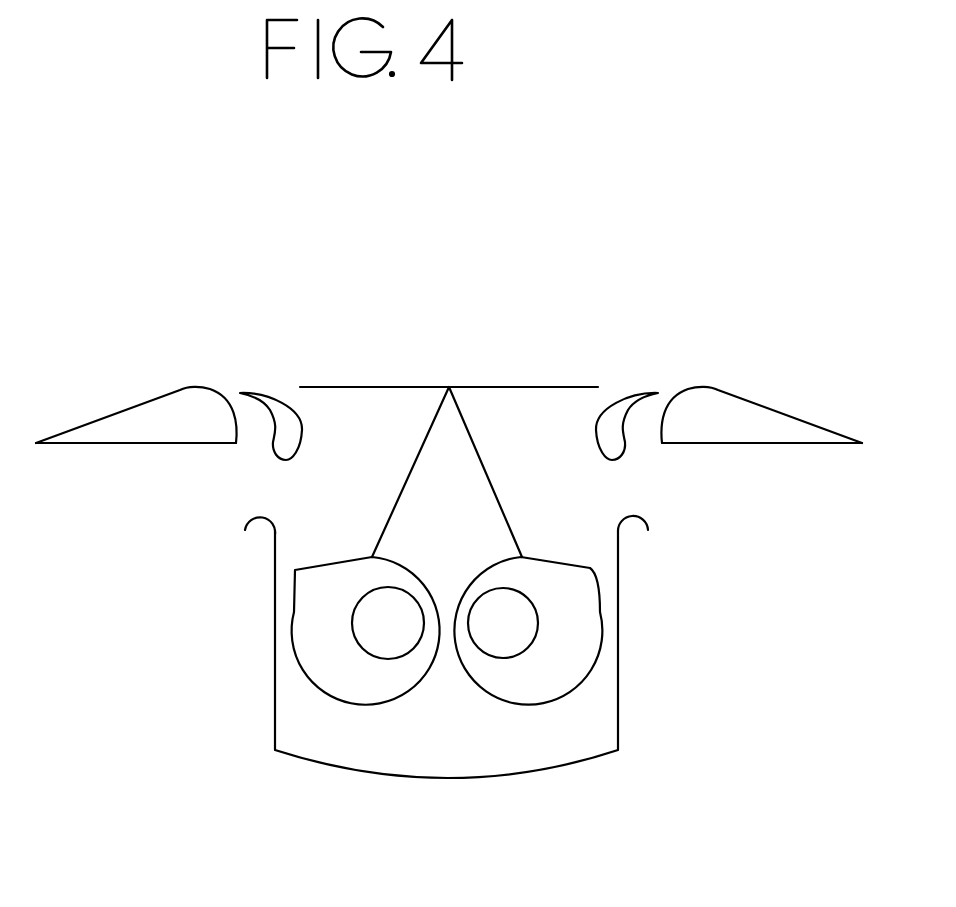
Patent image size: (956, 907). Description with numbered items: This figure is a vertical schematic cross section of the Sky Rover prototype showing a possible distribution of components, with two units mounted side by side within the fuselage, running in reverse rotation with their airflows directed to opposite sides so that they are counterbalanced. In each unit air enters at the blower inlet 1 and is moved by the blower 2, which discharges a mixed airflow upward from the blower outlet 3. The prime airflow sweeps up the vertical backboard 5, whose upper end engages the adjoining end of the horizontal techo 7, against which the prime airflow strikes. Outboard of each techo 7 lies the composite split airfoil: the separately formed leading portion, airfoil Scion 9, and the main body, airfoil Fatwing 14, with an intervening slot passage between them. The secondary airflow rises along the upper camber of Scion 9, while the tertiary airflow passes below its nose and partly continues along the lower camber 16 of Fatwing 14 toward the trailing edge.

The blower inlet 1 is at (367, 637).
The blower 2 is at (305, 597).
The blower outlet 3 is at (330, 561).
The backboard 5 is at (402, 480).
The techo 7 is at (427, 387).
The airfoil Scion 9 is at (302, 432).
The airfoil Fatwing 14 is at (170, 397).
The lower camber of airfoil Fatwing 16 is at (160, 443).